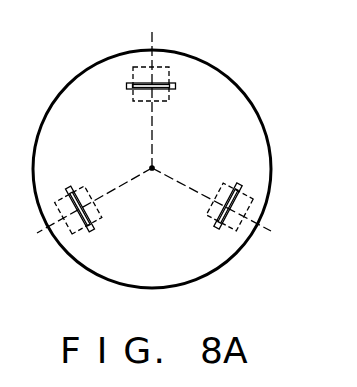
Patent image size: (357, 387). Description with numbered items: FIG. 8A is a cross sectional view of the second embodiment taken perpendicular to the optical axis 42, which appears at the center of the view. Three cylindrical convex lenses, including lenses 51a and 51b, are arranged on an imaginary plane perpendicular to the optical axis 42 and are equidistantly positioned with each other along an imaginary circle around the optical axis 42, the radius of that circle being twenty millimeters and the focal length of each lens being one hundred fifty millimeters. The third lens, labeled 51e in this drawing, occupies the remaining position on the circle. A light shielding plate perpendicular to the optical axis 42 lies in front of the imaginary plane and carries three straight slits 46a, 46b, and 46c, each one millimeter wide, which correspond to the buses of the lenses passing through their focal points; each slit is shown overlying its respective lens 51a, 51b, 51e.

The optical axis 42 is at (153, 171).
The straight slit 46a is at (174, 88).
The straight slit 46b is at (237, 185).
The straight slit 46c is at (92, 232).
The cylindrical convex lens 51a is at (161, 68).
The cylindrical convex lens 51b is at (267, 213).
The slot 51e is at (65, 217).